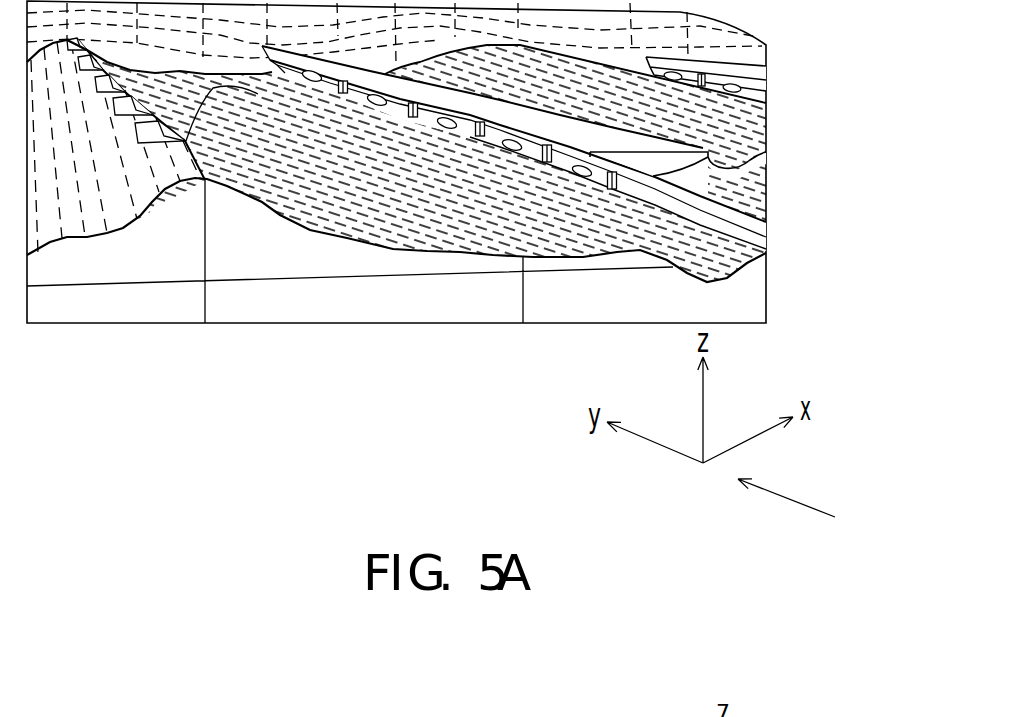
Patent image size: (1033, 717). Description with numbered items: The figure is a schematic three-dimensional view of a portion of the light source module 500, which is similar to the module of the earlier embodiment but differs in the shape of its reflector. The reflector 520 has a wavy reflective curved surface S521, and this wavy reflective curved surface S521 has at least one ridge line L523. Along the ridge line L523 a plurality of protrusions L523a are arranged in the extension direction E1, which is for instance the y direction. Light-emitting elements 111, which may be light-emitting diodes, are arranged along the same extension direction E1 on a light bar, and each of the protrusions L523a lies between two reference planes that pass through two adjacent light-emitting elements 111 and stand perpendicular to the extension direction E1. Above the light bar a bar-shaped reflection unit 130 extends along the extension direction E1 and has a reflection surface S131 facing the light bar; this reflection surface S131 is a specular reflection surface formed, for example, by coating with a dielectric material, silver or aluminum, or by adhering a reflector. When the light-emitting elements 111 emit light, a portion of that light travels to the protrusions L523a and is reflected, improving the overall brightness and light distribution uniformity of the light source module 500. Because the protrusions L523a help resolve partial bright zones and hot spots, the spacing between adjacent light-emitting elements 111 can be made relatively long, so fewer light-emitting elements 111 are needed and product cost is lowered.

The light source module 500 is at (838, 358).
The reflector 520 is at (353, 240).
The wavy reflective curved surface S521 is at (349, 163).
The ridge line L523 is at (192, 160).
The protrusions L523a is at (476, 148).
The light-emitting elements 111 is at (507, 150).
The bar-shaped reflection unit 130 is at (633, 160).
The reflection surface S131 is at (766, 152).
The extension direction E1 is at (786, 492).